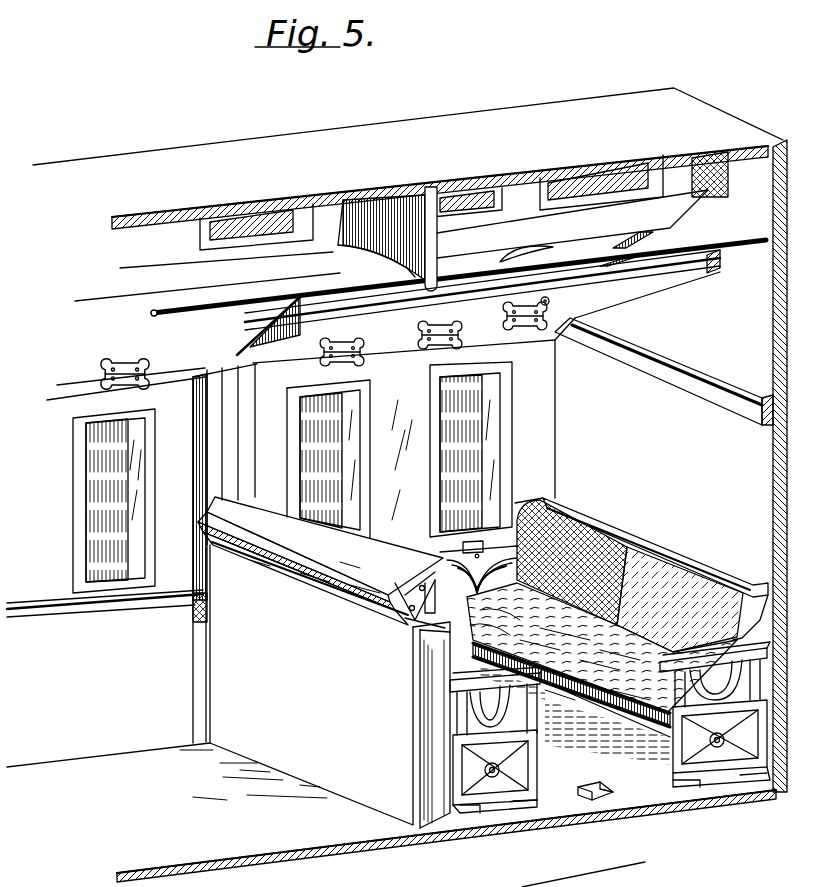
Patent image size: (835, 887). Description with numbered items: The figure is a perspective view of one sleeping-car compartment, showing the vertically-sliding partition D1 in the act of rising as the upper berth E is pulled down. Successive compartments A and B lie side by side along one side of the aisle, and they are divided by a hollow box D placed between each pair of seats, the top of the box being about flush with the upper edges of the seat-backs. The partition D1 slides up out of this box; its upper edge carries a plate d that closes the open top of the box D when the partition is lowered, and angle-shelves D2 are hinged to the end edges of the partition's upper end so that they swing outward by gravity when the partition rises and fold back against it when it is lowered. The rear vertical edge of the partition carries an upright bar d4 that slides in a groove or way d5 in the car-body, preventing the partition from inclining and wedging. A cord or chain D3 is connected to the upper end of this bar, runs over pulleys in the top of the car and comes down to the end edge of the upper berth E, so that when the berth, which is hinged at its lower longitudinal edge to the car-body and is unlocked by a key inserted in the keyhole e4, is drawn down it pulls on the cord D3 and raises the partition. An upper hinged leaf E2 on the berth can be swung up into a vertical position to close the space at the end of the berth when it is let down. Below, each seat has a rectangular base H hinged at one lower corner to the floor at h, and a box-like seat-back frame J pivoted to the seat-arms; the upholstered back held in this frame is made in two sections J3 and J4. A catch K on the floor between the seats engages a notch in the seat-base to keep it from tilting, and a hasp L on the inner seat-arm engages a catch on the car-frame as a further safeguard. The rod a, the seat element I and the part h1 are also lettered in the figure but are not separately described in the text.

The curtain rod a is at (180, 312).
The cord or chain D3 is at (230, 342).
The upper hinged leaf E2 is at (500, 262).
The keyhole e4 is at (549, 303).
The upper berth E is at (407, 323).
The groove or way d5 is at (210, 427).
The upright rod or bar d4 is at (227, 462).
The plate d is at (329, 538).
The hasp L is at (489, 526).
The seat-back frame J is at (642, 521).
The seat-back section J3 is at (608, 553).
The seat-back section J4 is at (680, 599).
The seat cushion I is at (615, 664).
The angle-shelves D2 is at (275, 601).
The hollow section or box D is at (328, 686).
The vertically-sliding partition D1 is at (397, 603).
The compartment B is at (165, 837).
The compartment A is at (598, 803).
The rectangular base H is at (582, 774).
The catch K is at (596, 797).
The hinge point h is at (517, 807).
The hub h1 is at (604, 755).